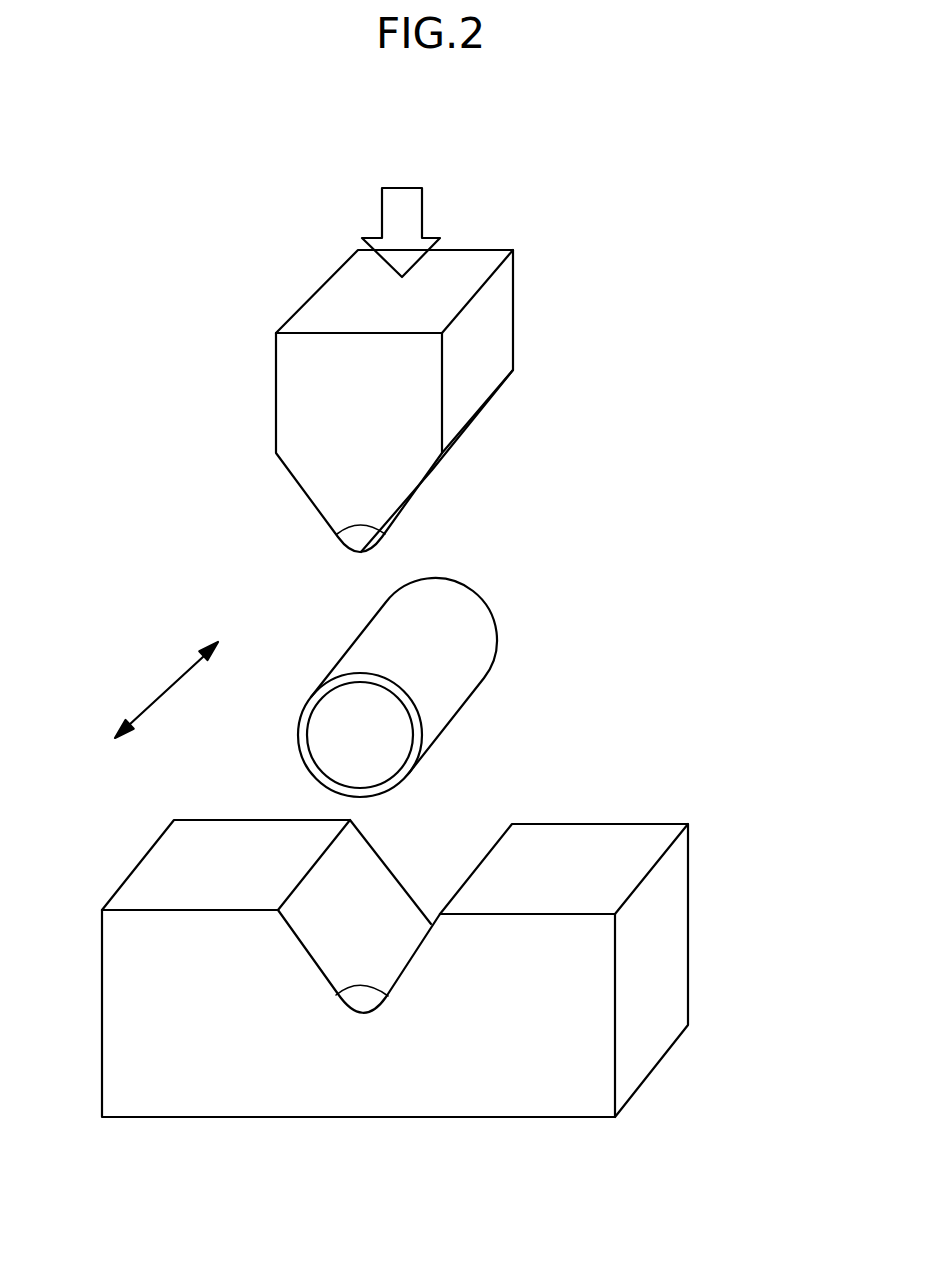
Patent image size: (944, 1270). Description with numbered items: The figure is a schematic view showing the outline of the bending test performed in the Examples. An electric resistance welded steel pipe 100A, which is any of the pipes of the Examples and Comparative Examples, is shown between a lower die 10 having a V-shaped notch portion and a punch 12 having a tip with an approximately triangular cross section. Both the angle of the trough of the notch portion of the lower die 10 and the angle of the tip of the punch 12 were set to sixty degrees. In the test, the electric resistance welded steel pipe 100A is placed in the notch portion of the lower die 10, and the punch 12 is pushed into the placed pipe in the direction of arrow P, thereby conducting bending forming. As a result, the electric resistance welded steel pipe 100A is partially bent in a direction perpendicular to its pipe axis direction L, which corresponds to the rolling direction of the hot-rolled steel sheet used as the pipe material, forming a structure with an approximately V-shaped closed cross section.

The lower die 10 is at (673, 952).
The punch 12 is at (500, 323).
The electric resistance welded steel pipe 100A is at (487, 702).
The direction of arrow P is at (423, 212).
The pipe axis direction L is at (166, 690).